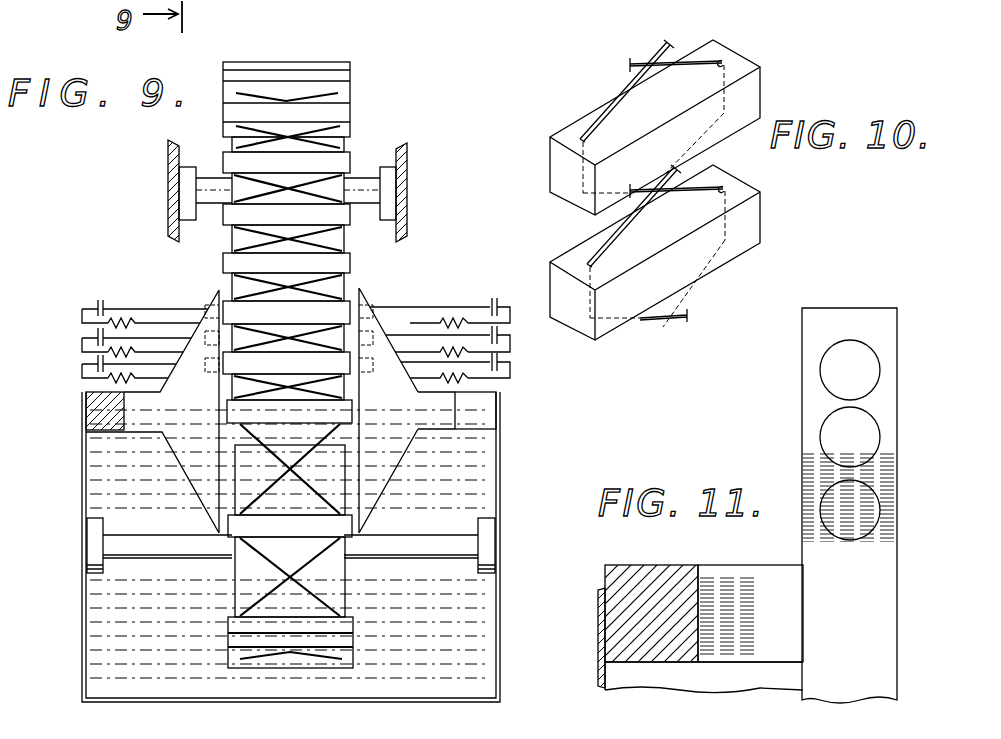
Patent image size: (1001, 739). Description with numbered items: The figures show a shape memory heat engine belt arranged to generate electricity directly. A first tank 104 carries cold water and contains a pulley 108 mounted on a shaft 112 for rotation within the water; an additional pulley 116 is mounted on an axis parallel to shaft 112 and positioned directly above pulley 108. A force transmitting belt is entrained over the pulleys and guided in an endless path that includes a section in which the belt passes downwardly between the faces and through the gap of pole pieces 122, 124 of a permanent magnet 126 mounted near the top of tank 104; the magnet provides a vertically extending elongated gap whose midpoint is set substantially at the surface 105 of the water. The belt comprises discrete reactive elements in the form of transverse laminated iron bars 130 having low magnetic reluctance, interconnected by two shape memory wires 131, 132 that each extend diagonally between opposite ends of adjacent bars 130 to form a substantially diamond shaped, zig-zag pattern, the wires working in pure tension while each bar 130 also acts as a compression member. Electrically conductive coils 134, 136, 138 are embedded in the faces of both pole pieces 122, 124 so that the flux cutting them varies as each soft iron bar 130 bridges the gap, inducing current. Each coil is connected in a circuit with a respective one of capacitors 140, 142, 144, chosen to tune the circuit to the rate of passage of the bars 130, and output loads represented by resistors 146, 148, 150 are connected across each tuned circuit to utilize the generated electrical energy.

In FIG. 9, the first tank 104 is at (500, 446).
In FIG. 9, the surface of the water 105 is at (460, 405).
In FIG. 9, the pulley 108 is at (348, 618).
In FIG. 9, the shaft 112 is at (420, 558).
In FIG. 9, the pulley 116 is at (348, 243).
In FIG. 9, the pole piece 122 is at (212, 506).
In FIG. 11, the pole piece 122 is at (852, 312).
In FIG. 9, the pole piece 124 is at (368, 506).
In FIG. 9, the permanent magnet 126 is at (88, 416).
In FIG. 11, the permanent magnet 126 is at (664, 570).
In FIG. 9, the laminated iron bar 130 is at (350, 130).
In FIG. 10, the laminated iron bar 130 is at (760, 82).
In FIG. 9, the shape memory wire 131 is at (248, 598).
In FIG. 10, the shape memory wire 131 is at (637, 80).
In FIG. 9, the shape memory wire 132 is at (330, 598).
In FIG. 10, the shape memory wire 132 is at (672, 48).
In FIG. 9, the electrically conductive coil 134 is at (219, 314).
In FIG. 11, the electrically conductive coil 134 is at (822, 366).
In FIG. 9, the electrically conductive coil 136 is at (212, 342).
In FIG. 11, the electrically conductive coil 136 is at (824, 432).
In FIG. 9, the electrically conductive coil 138 is at (219, 366).
In FIG. 11, the electrically conductive coil 138 is at (826, 520).
In FIG. 9, the capacitor 140 is at (98, 300).
In FIG. 9, the capacitor 142 is at (82, 318).
In FIG. 9, the capacitor 144 is at (82, 368).
In FIG. 9, the resistor 146 is at (130, 316).
In FIG. 9, the resistor 148 is at (100, 346).
In FIG. 9, the resistor 150 is at (90, 380).